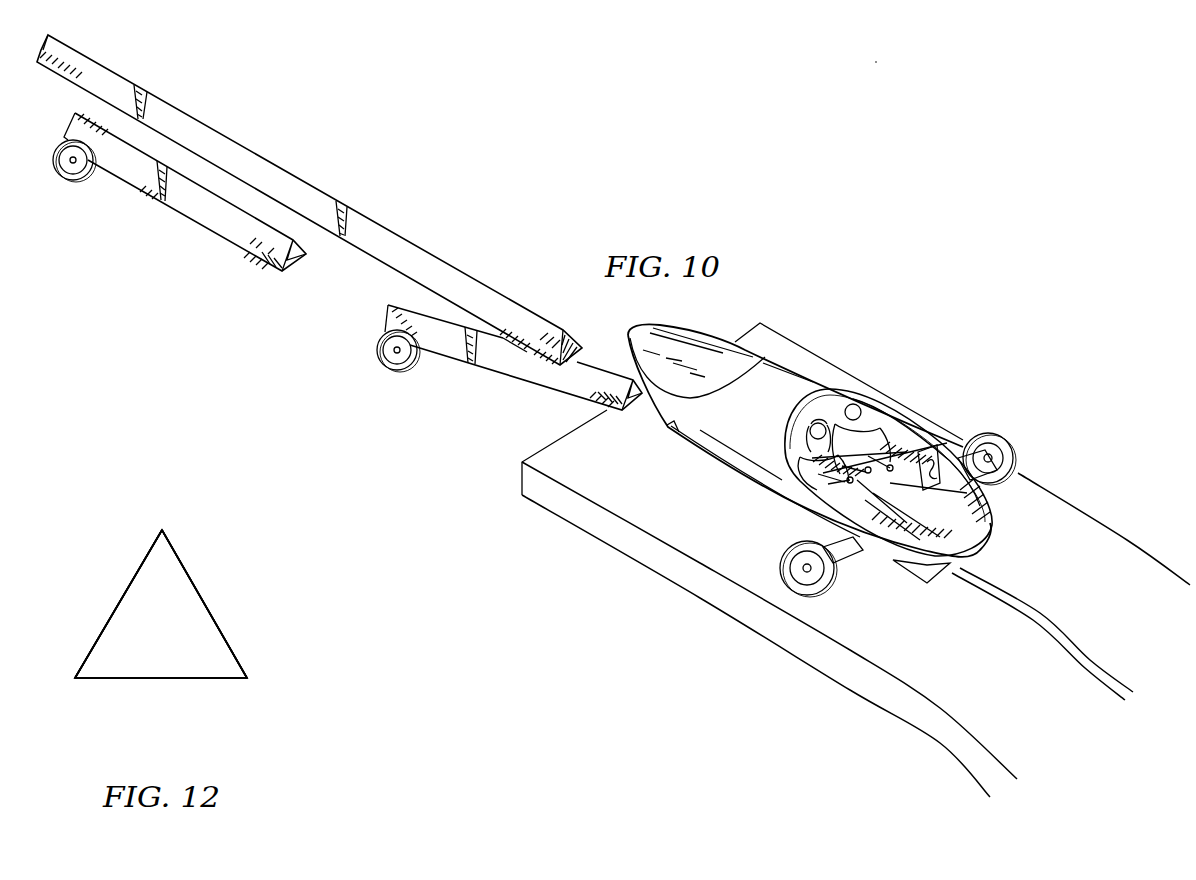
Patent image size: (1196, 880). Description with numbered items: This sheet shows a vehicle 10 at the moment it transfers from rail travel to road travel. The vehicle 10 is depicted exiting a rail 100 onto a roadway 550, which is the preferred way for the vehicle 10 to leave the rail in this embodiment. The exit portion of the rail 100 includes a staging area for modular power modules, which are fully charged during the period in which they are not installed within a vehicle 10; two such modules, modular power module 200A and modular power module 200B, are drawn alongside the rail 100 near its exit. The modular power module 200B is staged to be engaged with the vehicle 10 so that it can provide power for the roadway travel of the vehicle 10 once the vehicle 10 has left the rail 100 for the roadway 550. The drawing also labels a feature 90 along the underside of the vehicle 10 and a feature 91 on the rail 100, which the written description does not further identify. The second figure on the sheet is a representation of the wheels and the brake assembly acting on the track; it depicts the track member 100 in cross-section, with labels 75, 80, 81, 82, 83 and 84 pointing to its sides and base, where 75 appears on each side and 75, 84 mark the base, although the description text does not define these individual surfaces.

In FIG. 10, the vehicle 10 is at (795, 365).
In FIG. 10, the lower body guide rail 90 is at (680, 436).
In FIG. 10, the beam surface 91 is at (527, 309).
In FIG. 10, the rail 100 is at (268, 160).
In FIG. 12, the rail 100 is at (233, 639).
In FIG. 10, the modular power module 200A is at (178, 214).
In FIG. 10, the modular power module 200B is at (487, 370).
In FIG. 10, the roadway 550 is at (1083, 520).
In FIG. 12, the beam surface 75 is at (164, 649).
In FIG. 12, the left side surface 80 is at (100, 592).
In FIG. 12, the left side surface 81 is at (99, 604).
In FIG. 12, the right side surface 82 is at (222, 593).
In FIG. 12, the right side surface 83 is at (227, 604).
In FIG. 12, the bottom surface 84 is at (162, 702).